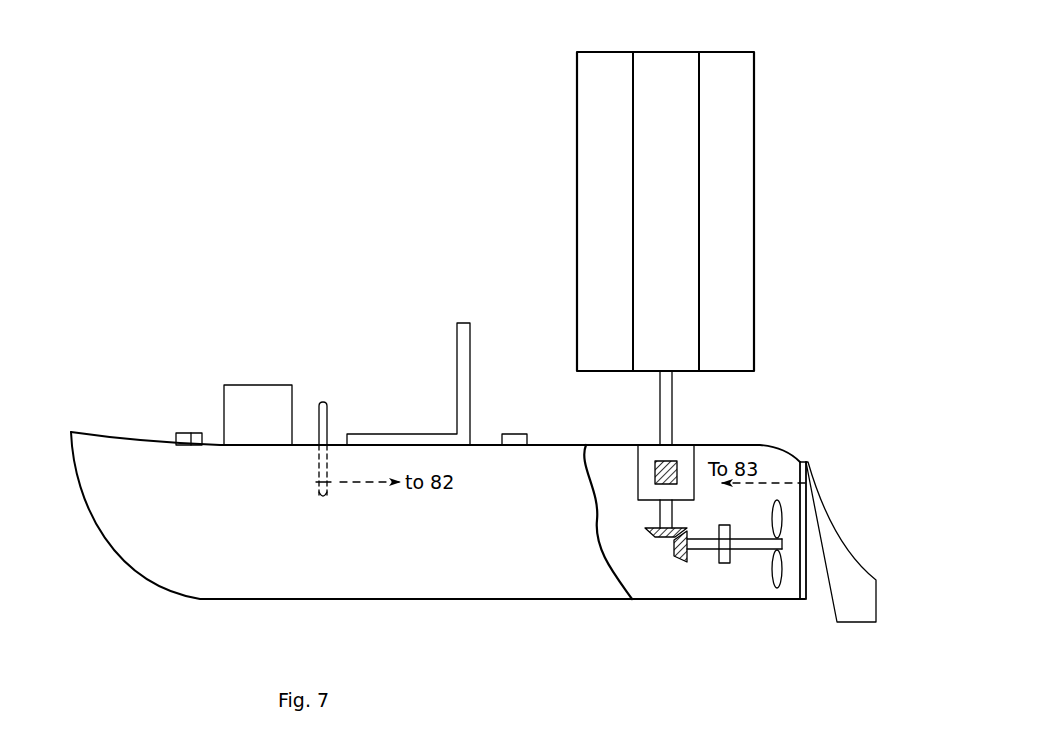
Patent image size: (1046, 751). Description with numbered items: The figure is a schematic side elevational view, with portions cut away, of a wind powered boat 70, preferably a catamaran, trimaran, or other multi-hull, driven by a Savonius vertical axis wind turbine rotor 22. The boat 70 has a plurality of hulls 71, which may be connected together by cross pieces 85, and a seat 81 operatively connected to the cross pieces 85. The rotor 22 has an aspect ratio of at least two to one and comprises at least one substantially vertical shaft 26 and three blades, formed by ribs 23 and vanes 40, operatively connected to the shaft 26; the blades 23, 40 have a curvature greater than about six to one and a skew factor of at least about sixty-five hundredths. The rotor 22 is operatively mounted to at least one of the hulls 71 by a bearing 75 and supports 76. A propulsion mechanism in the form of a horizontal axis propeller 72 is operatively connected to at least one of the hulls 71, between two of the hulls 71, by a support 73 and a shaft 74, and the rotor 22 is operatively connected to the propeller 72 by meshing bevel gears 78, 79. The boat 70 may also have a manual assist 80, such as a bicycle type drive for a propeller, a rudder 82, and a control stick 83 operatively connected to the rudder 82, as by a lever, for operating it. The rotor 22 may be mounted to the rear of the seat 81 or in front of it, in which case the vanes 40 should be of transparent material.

The Savonius vertical axis wind turbine rotor 22 is at (547, 205).
The ribs 23 is at (572, 102).
The vanes 40 is at (818, 124).
The vertical shaft 26 is at (668, 402).
The wind powered boat 70 is at (255, 282).
The hulls 71 is at (474, 563).
The horizontal axis propeller 72 is at (785, 577).
The support 73 is at (731, 537).
The shaft 74 is at (703, 549).
The bearing 75 is at (684, 503).
The supports 76 is at (660, 465).
The bevel gear 78 is at (650, 533).
The bevel gear 79 is at (677, 555).
The manual assist 80 is at (263, 410).
The seat 81 is at (463, 366).
The rudder 82 is at (840, 577).
The control stick 83 is at (328, 423).
The cross pieces 85 is at (192, 430).